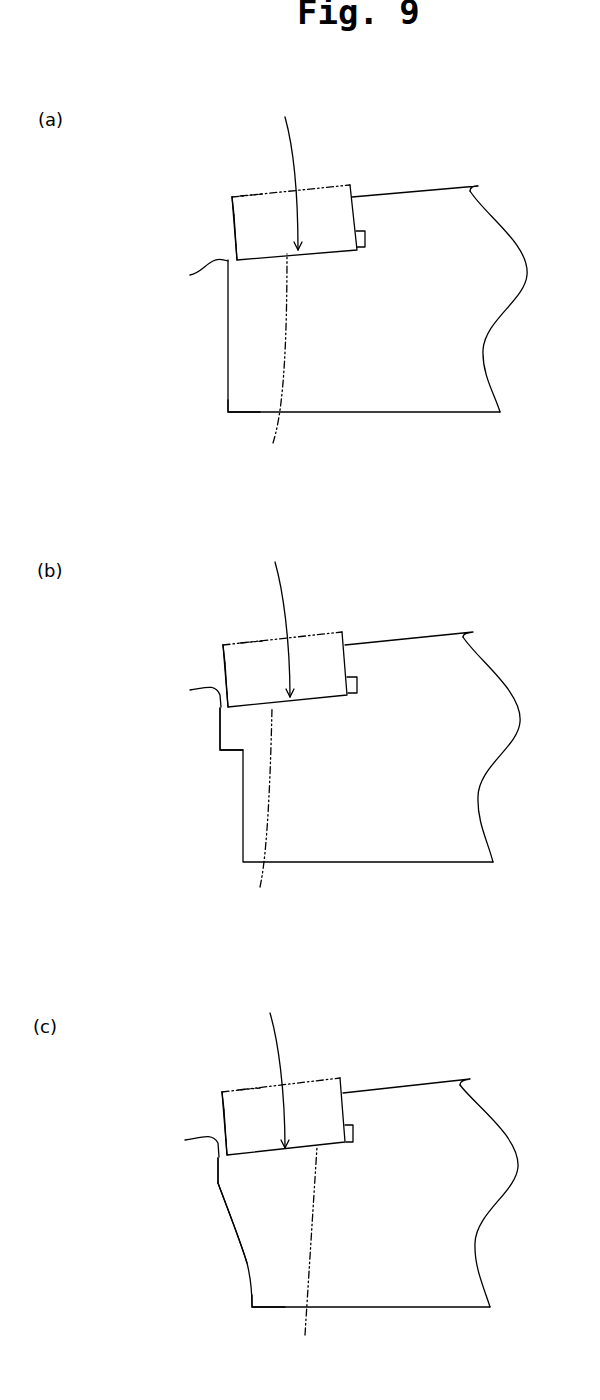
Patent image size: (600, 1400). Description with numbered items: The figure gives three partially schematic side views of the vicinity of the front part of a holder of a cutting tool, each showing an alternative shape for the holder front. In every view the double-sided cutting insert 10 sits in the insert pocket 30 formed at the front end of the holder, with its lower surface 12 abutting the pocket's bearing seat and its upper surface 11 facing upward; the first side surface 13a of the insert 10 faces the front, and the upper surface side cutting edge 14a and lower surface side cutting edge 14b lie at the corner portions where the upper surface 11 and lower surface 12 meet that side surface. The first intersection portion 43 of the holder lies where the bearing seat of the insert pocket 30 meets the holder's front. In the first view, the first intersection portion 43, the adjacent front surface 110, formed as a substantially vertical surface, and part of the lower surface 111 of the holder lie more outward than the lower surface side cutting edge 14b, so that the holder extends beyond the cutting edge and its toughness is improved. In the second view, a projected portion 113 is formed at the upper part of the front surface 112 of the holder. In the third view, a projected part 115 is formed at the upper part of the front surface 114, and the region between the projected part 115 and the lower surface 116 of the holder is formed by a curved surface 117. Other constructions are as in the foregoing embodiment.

The double-sided cutting insert 10 is at (327, 200).
The upper surface 11 is at (261, 195).
The lower surface 12 is at (274, 805).
The first side surface 13a is at (234, 224).
The upper surface side cutting edge 14a is at (231, 196).
The lower surface side cutting edge 14b is at (235, 252).
The insert pocket 30 is at (279, 622).
The first intersection portion 43 is at (190, 275).
The front surface of the holder 110 is at (228, 333).
The lower surface of the holder 111 is at (246, 413).
The front surface of the holder 112 is at (231, 790).
The projected portion 113 is at (220, 728).
The front surface of the holder 114 is at (219, 1218).
The projected part 115 is at (218, 1173).
The lower surface of the holder 116 is at (270, 1308).
The curved surface 117 is at (247, 1262).